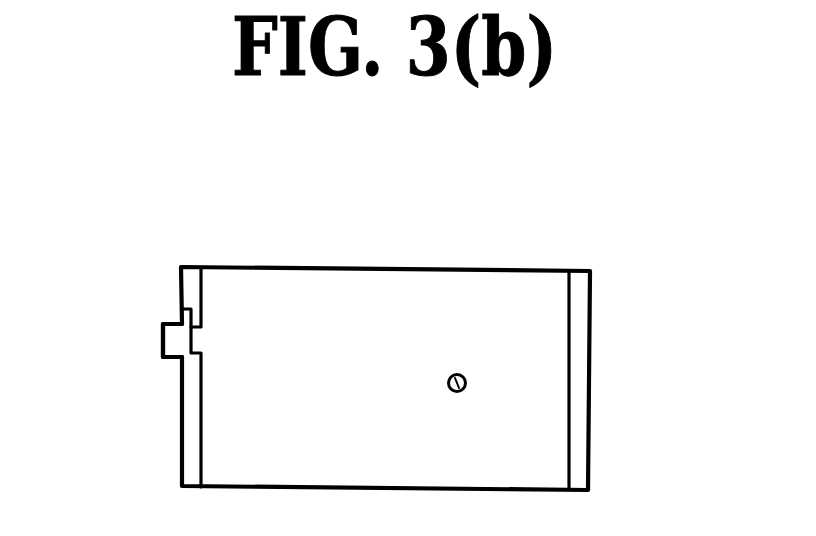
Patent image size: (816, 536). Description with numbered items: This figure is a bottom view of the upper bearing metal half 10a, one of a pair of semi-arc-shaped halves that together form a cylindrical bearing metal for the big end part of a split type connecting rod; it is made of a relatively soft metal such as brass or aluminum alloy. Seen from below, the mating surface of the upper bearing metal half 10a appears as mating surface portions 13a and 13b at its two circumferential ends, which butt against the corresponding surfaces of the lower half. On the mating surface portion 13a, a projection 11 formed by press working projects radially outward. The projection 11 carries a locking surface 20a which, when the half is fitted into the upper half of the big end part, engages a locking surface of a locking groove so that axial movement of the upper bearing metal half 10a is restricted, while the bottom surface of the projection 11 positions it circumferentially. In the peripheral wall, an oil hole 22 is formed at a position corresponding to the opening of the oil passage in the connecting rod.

The upper bearing metal half 10a is at (442, 254).
The projection 11 is at (163, 340).
The mating surface portion 13a is at (181, 306).
The mating surface portion 13b is at (584, 411).
The locking surface 20a is at (167, 358).
The oil hole 22 is at (447, 385).